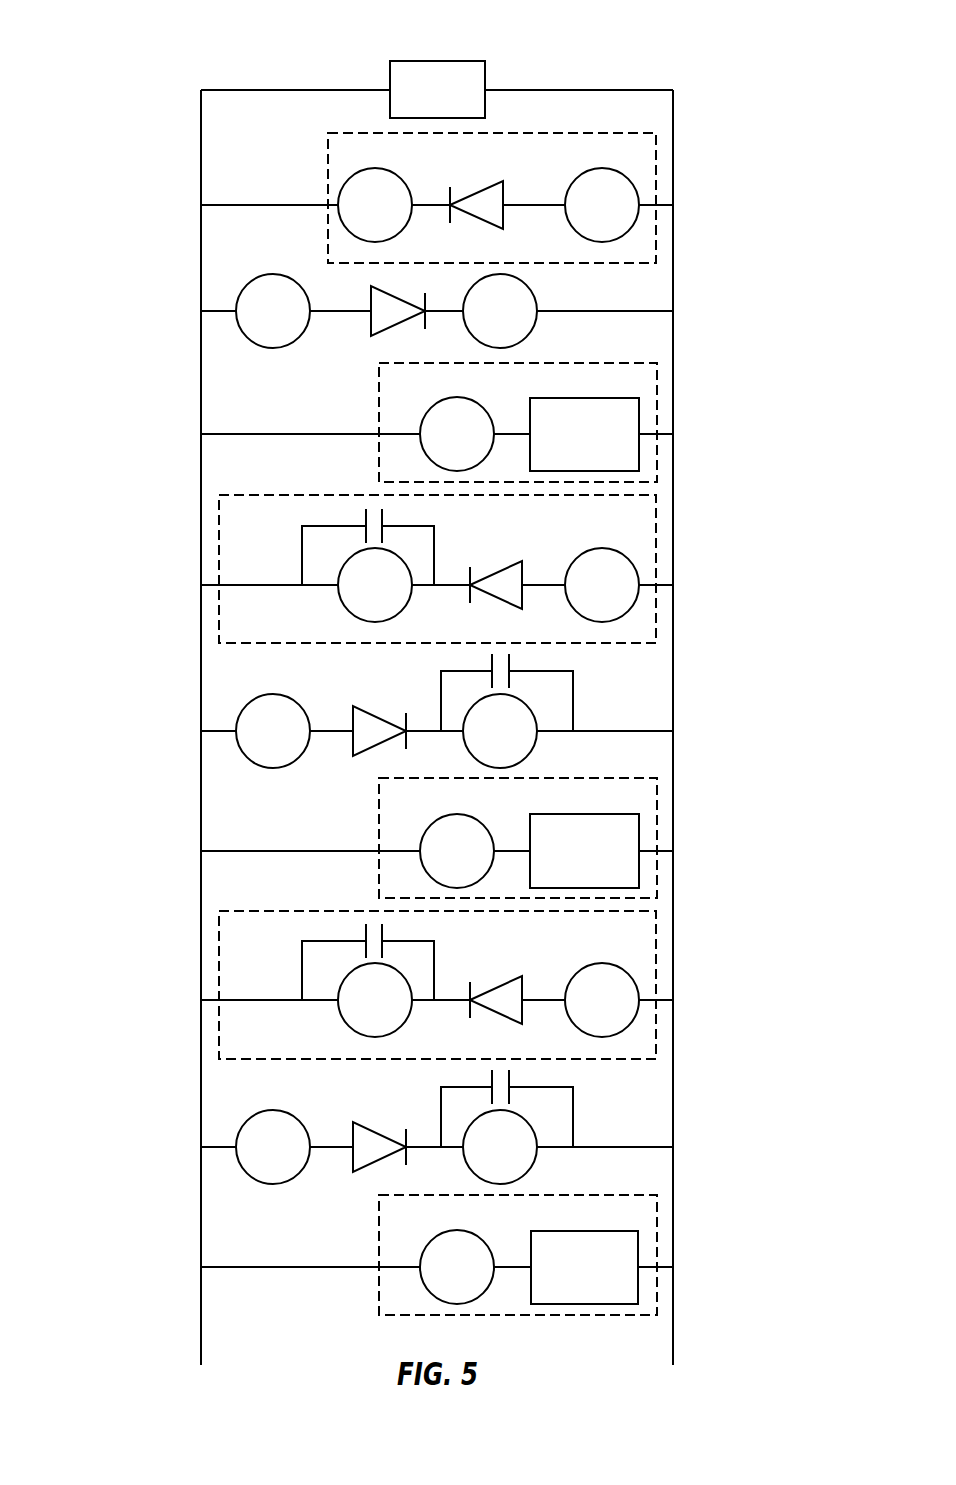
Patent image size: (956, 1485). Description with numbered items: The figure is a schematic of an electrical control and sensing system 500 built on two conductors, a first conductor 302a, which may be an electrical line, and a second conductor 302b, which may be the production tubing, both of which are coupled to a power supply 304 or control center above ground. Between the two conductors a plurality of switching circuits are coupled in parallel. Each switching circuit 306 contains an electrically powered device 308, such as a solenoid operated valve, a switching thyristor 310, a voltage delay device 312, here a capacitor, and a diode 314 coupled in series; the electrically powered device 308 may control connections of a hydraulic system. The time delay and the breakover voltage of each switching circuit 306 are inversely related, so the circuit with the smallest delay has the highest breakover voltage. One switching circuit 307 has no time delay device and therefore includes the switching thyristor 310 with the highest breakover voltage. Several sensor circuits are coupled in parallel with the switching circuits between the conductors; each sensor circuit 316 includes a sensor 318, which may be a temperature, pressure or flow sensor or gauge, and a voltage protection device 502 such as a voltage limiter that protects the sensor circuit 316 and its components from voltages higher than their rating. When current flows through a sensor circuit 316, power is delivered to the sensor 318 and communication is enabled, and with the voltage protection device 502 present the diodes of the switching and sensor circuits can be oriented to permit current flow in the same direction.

The electrical control and sensing system 500 is at (647, 50).
The power supply 304 is at (437, 61).
The first conductor 302a is at (201, 148).
The second conductor 302b is at (673, 157).
The switching circuit 307 is at (656, 248).
The switching circuit 306 is at (656, 550).
The electrically powered device 308 is at (602, 168).
The switching thyristor 310 is at (375, 168).
The voltage delay device 312 is at (434, 546).
The diode 314 is at (506, 218).
The sensor circuit 316 is at (657, 390).
The sensor 318 is at (457, 397).
The voltage protection device 502 is at (585, 398).